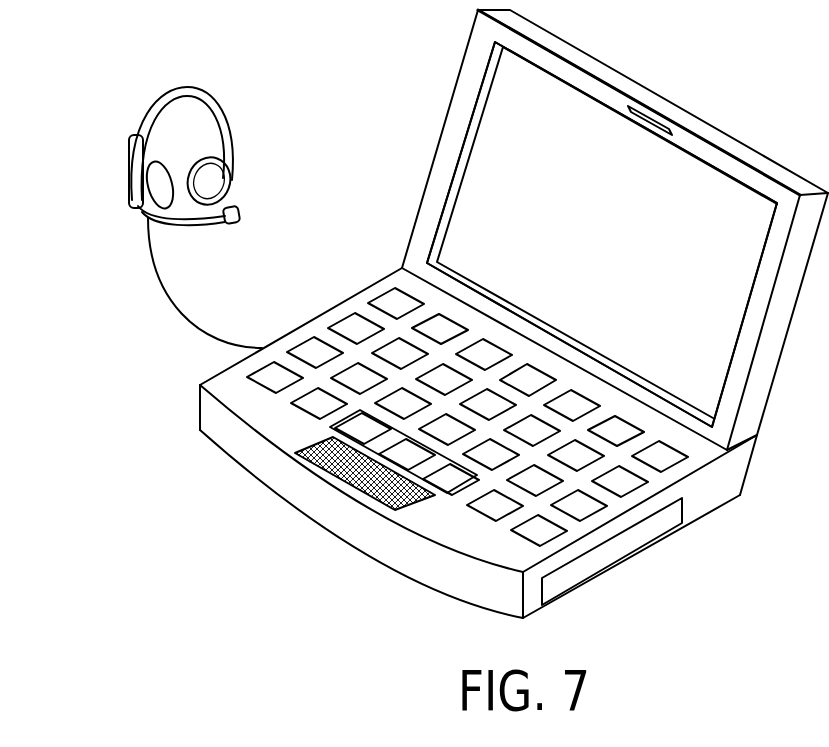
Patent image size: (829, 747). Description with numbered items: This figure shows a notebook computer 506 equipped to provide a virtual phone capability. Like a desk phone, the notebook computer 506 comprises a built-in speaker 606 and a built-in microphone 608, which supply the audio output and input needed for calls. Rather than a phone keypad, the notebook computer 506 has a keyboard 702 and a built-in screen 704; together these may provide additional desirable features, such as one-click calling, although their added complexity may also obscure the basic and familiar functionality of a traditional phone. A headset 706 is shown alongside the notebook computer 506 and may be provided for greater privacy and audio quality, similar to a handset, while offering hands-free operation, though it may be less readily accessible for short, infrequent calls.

The notebook computer 506 is at (358, 98).
The built-in speaker 606 is at (312, 468).
The built-in microphone 608 is at (657, 116).
The keyboard 702 is at (390, 304).
The built-in screen 704 is at (463, 240).
The headset 706 is at (172, 92).